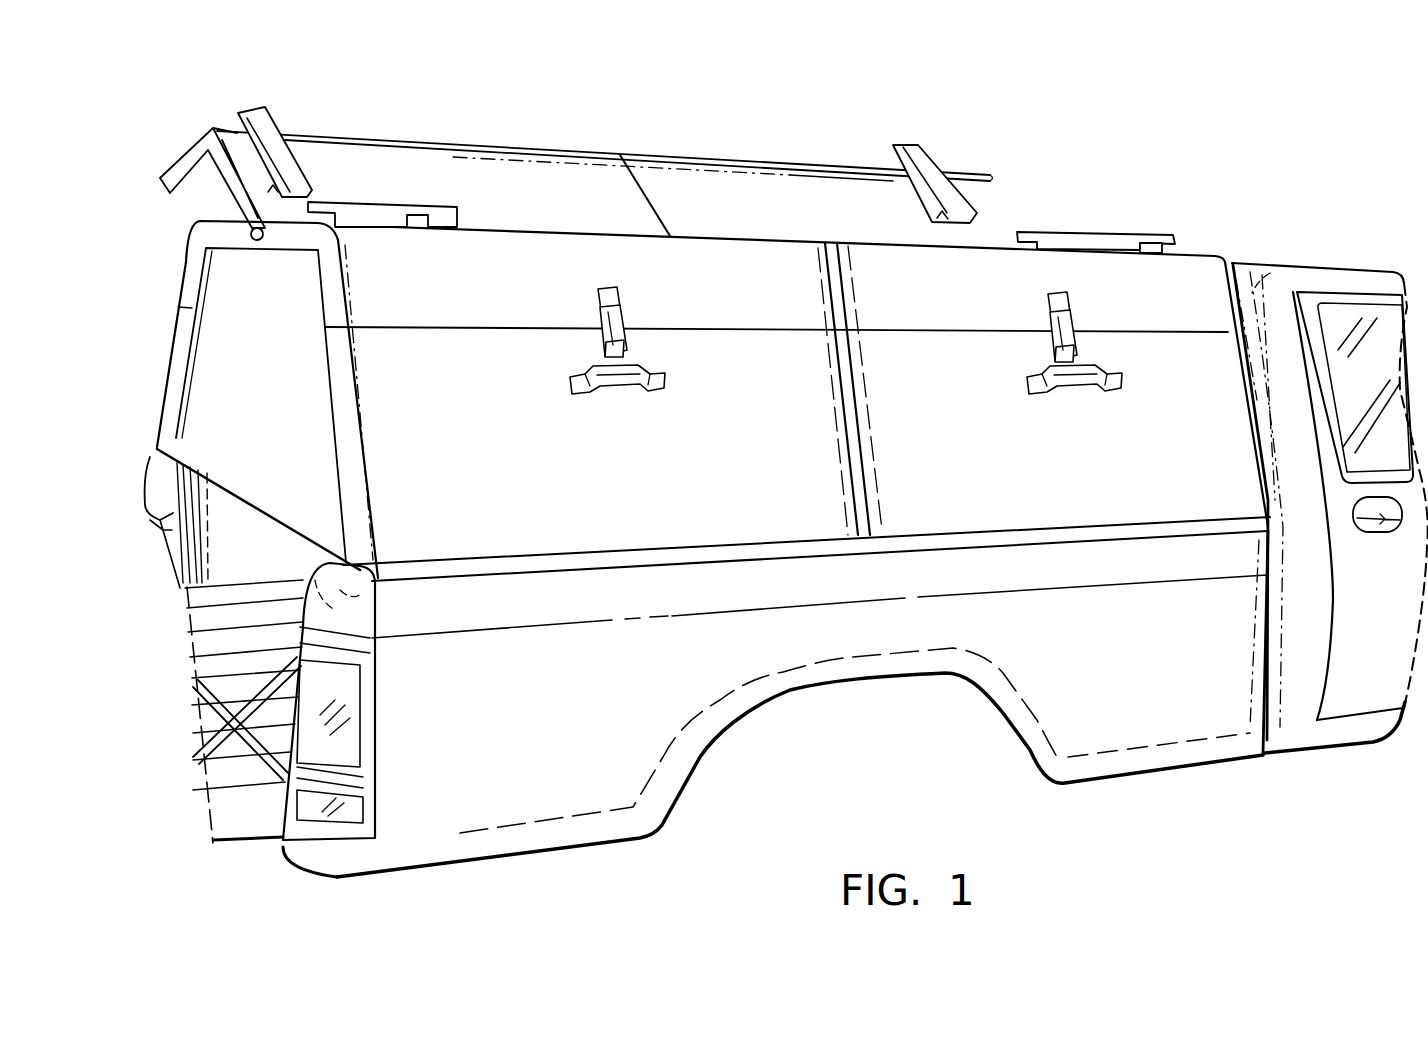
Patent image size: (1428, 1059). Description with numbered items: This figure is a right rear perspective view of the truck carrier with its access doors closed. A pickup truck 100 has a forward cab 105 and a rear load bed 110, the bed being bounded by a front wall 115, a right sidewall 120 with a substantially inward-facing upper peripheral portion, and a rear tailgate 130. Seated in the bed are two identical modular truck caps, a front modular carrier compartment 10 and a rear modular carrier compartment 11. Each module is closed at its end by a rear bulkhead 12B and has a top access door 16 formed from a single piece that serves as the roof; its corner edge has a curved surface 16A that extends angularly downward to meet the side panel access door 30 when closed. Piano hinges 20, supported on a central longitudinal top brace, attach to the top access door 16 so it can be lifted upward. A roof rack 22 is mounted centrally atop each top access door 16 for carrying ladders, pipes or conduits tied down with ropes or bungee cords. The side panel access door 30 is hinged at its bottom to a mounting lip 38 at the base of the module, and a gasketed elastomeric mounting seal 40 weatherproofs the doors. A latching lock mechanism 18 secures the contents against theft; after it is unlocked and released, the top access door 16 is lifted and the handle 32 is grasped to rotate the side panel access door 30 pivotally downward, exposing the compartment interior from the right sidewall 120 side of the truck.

The front modular carrier compartment 10 is at (985, 243).
The rear modular carrier compartment 11 is at (520, 226).
The rear bulkhead 12B is at (268, 403).
The top access door 16 is at (510, 303).
The curved surface 16A is at (207, 130).
The latching lock mechanism 18 is at (623, 313).
The piano hinge 20 is at (258, 243).
The roof rack 22 is at (372, 201).
The side panel access door 30 is at (487, 440).
The handle 32 is at (617, 392).
The mounting lip 38 is at (655, 550).
The gasketed elastomeric mounting seal 40 is at (693, 557).
The pickup truck 100 is at (1280, 255).
The forward cab 105 is at (1338, 262).
The rear load bed 110 is at (230, 477).
The front wall 115 is at (1260, 655).
The right sidewall 120 is at (612, 711).
The rear tailgate 130 is at (215, 820).